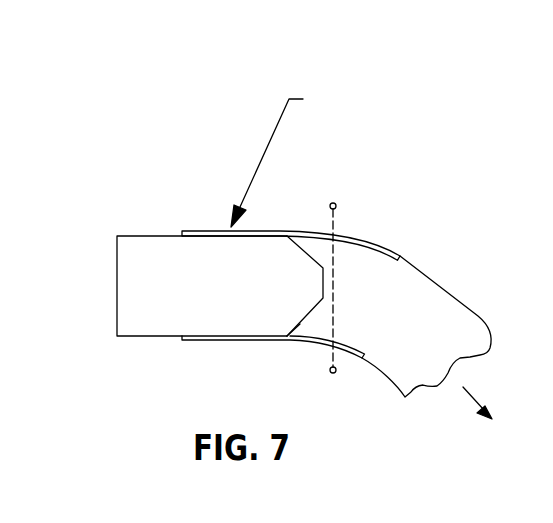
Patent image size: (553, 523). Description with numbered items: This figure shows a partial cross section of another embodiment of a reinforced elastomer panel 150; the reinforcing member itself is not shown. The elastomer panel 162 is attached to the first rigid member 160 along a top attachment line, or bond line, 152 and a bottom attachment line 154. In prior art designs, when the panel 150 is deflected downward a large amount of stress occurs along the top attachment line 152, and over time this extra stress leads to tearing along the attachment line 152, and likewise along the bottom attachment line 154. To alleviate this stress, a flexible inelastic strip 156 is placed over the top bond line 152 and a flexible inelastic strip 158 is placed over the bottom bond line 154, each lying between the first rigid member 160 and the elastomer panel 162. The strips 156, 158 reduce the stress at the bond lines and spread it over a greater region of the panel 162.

The reinforced elastomer panel 150 is at (292, 56).
The top attachment line 152 is at (295, 236).
The bottom attachment line 154 is at (300, 338).
The flexible inelastic strip 156 is at (263, 230).
The flexible inelastic strip 158 is at (207, 342).
The first rigid member 160 is at (135, 263).
The elastomer panel 162 is at (423, 295).